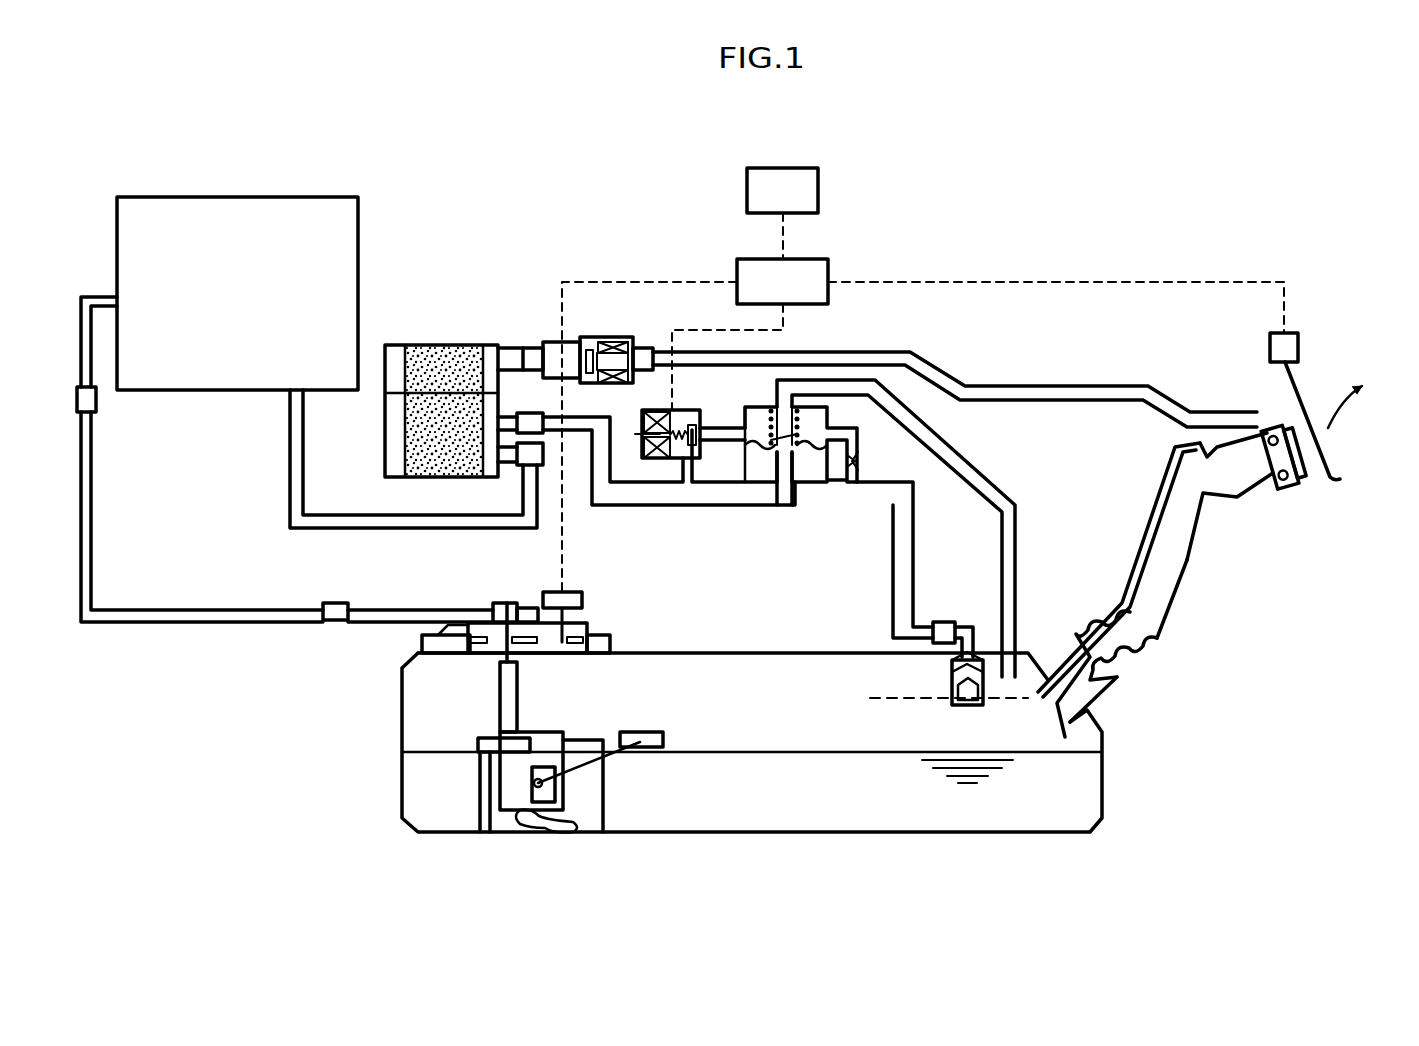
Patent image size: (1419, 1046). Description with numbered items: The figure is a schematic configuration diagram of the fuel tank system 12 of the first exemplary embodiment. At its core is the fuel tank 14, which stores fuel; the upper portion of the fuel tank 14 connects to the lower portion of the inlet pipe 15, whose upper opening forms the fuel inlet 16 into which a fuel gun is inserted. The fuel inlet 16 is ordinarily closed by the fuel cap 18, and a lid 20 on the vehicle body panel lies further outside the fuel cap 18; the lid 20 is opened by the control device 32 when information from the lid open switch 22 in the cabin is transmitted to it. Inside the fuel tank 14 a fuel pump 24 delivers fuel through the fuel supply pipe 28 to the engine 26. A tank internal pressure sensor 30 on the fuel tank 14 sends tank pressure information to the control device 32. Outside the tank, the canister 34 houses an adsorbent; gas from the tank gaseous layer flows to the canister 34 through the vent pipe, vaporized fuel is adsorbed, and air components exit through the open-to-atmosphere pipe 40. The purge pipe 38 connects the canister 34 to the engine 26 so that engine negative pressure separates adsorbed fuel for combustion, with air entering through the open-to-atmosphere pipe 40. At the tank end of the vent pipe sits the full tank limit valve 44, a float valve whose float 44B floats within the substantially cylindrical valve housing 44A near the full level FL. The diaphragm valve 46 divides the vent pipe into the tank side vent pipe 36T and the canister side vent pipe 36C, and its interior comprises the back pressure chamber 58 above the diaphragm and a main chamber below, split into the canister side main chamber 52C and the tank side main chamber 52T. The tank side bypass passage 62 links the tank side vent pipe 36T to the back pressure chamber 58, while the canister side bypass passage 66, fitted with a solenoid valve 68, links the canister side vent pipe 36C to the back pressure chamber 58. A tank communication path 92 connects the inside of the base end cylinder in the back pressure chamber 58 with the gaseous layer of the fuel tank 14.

The fuel tank system 12 is at (940, 183).
The fuel tank 14 is at (1102, 790).
The inlet pipe 15 is at (1180, 580).
The fuel inlet 16 is at (1252, 479).
The fuel cap 18 is at (1292, 490).
The lid 20 is at (1342, 477).
The lid open switch 22 is at (768, 168).
The fuel pump 24 is at (512, 820).
The engine 26 is at (187, 197).
The fuel supply pipe 28 is at (235, 622).
The tank internal pressure sensor 30 is at (582, 600).
The control device 32 is at (828, 262).
The canister 34 is at (435, 345).
The canister side vent pipe 36C is at (646, 507).
The tank side vent pipe 36T is at (890, 550).
The purge pipe 38 is at (290, 497).
The open-to-atmosphere pipe 40 is at (940, 365).
The full tank limit valve 44 is at (946, 708).
The valve housing 44A is at (950, 672).
The float 44B is at (968, 700).
The diaphragm valve 46 is at (759, 403).
The canister side main chamber 52C is at (784, 486).
The tank side main chamber 52T is at (809, 484).
The back pressure chamber 58 is at (815, 415).
The tank side bypass passage 62 is at (858, 450).
The canister side bypass passage 66 is at (720, 442).
The solenoid valve 68 is at (648, 410).
The tank communication path 92 is at (984, 476).
The full fuel level FL is at (876, 704).